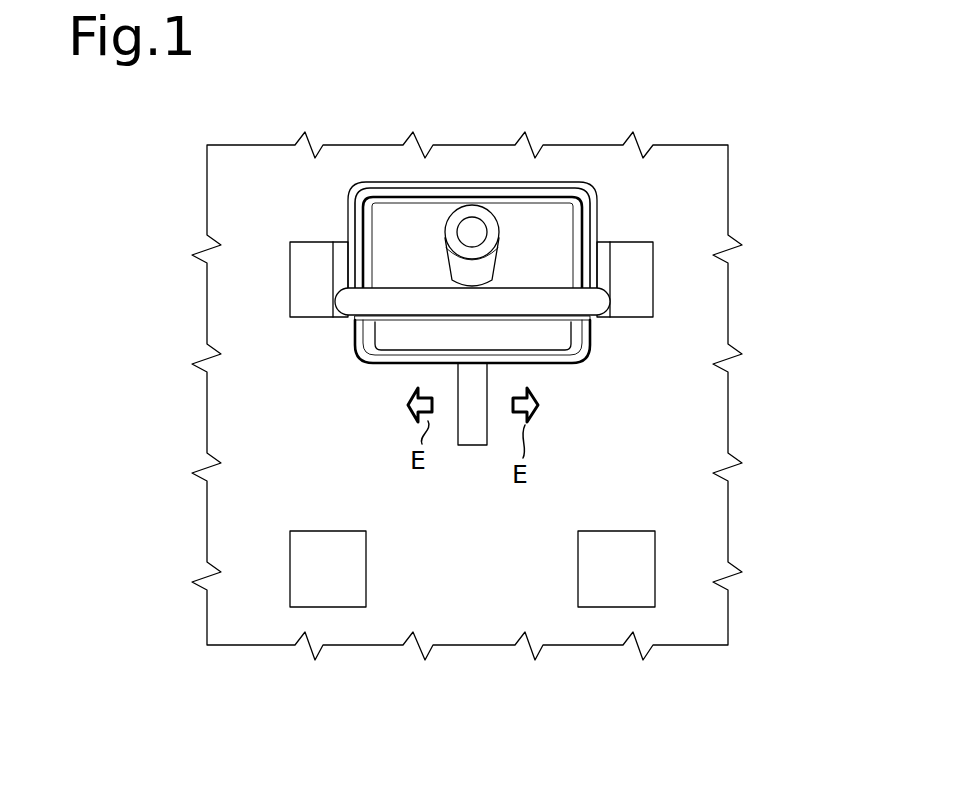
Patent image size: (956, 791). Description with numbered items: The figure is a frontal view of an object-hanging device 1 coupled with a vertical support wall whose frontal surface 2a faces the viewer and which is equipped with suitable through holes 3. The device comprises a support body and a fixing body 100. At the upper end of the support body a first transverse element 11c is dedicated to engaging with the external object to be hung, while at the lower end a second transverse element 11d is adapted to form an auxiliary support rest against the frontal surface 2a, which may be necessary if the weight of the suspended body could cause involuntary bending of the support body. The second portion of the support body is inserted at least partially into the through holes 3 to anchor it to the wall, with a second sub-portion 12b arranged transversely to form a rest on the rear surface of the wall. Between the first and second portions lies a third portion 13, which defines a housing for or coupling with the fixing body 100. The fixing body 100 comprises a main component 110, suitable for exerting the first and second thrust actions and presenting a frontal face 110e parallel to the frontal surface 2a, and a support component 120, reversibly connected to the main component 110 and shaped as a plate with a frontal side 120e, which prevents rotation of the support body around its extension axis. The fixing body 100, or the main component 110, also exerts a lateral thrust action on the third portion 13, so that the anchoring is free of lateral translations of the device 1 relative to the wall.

The object-hanging device 1 is at (348, 357).
The frontal surface 2a is at (448, 610).
The through holes 3 is at (310, 292).
The second sub-portion 12b is at (347, 255).
The fixing body 100 is at (562, 172).
The main component 110 is at (345, 207).
The frontal face 110e is at (545, 223).
The first transverse element 11c is at (477, 232).
The second transverse element 11d is at (473, 437).
The third portion 13 is at (552, 298).
The support component 120 is at (390, 368).
The frontal side 120e is at (538, 338).